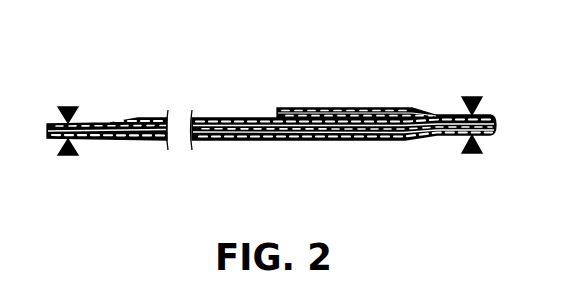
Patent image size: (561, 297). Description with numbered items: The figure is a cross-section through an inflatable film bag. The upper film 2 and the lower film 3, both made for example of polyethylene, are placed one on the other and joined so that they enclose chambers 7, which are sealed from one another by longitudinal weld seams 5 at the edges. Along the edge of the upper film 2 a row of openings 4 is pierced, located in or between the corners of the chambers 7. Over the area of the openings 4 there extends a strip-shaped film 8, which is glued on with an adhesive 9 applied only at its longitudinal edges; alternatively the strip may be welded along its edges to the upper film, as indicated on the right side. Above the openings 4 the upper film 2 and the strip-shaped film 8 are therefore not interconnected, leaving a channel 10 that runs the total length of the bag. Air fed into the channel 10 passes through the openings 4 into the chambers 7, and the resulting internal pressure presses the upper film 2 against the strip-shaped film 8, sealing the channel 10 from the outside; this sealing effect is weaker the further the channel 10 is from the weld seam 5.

The upper film 2 is at (152, 118).
The lower film 3 is at (146, 139).
The openings 4 is at (371, 128).
The longitudinal weld seams 5 is at (67, 105).
The chambers 7 is at (213, 119).
The strip-shaped film 8 is at (288, 109).
The adhesive 9 is at (315, 112).
The channel 10 is at (367, 119).